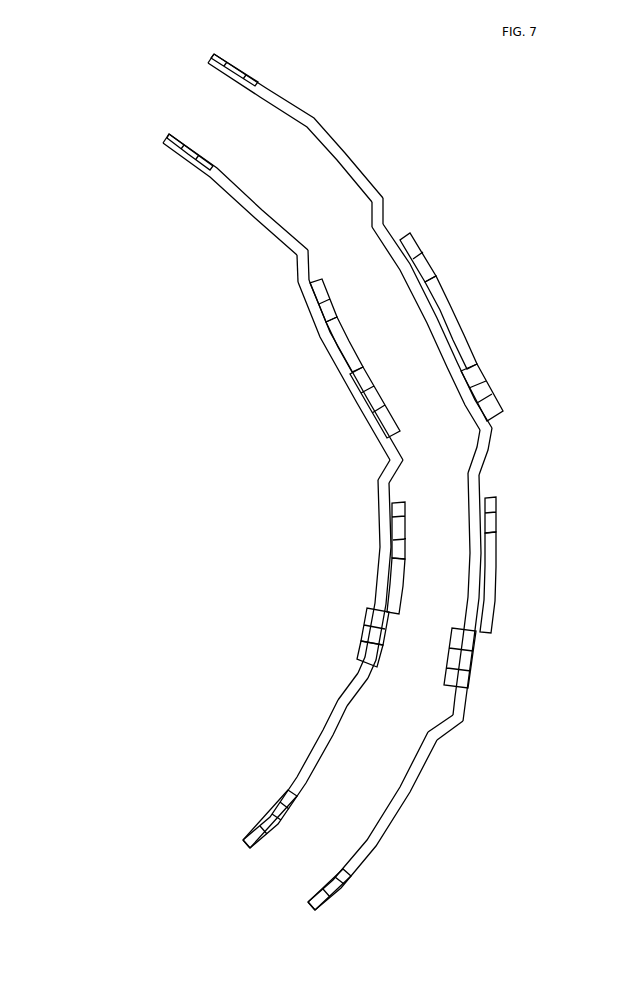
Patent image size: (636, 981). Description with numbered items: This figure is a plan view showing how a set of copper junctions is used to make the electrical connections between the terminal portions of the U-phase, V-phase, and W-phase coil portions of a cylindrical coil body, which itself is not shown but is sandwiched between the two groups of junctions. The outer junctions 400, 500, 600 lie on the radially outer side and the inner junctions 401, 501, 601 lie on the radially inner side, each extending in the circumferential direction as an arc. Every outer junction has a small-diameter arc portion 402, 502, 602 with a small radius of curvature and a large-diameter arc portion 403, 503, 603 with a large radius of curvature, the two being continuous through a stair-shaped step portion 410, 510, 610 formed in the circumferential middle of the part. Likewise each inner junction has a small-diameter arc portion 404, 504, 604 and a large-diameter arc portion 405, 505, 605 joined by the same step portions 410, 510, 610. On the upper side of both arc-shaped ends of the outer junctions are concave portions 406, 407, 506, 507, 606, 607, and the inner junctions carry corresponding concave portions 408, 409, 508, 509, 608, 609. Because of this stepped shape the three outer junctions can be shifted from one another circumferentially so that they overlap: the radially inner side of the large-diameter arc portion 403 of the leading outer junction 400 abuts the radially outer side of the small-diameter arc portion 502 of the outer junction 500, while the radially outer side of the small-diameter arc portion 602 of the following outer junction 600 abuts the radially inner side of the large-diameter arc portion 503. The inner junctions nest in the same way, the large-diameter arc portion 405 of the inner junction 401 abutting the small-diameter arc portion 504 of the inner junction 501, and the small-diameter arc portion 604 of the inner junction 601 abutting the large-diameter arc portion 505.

The outer junction 400 is at (427, 839).
The inner junction 401 is at (250, 766).
The small-diameter arc portion 402 is at (397, 807).
The large-diameter arc portion 403 is at (477, 673).
The small-diameter arc portion 404 is at (295, 788).
The large-diameter arc portion 405 is at (370, 670).
The concave portion 406 is at (333, 893).
The concave portion 407 is at (497, 528).
The concave portion 408 is at (267, 822).
The concave portion 409 is at (402, 538).
The step portion 410 is at (467, 727).
The outer junction 500 is at (494, 445).
The inner junction 501 is at (298, 478).
The small-diameter arc portion 502 is at (470, 597).
The large-diameter arc portion 503 is at (457, 333).
The small-diameter arc portion 504 is at (387, 577).
The large-diameter arc portion 505 is at (357, 377).
The concave portion 506 is at (462, 660).
The concave portion 507 is at (427, 263).
The concave portion 508 is at (373, 633).
The concave portion 509 is at (345, 313).
The step portion 510 is at (505, 447).
The outer junction 600 is at (317, 107).
The inner junction 601 is at (169, 194).
The small-diameter arc portion 602 is at (390, 240).
The large-diameter arc portion 603 is at (283, 100).
The small-diameter arc portion 604 is at (343, 352).
The large-diameter arc portion 605 is at (240, 197).
The concave portion 606 is at (463, 392).
The concave portion 607 is at (235, 63).
The concave portion 608 is at (365, 423).
The concave portion 609 is at (187, 152).
The step portion 610 is at (387, 190).